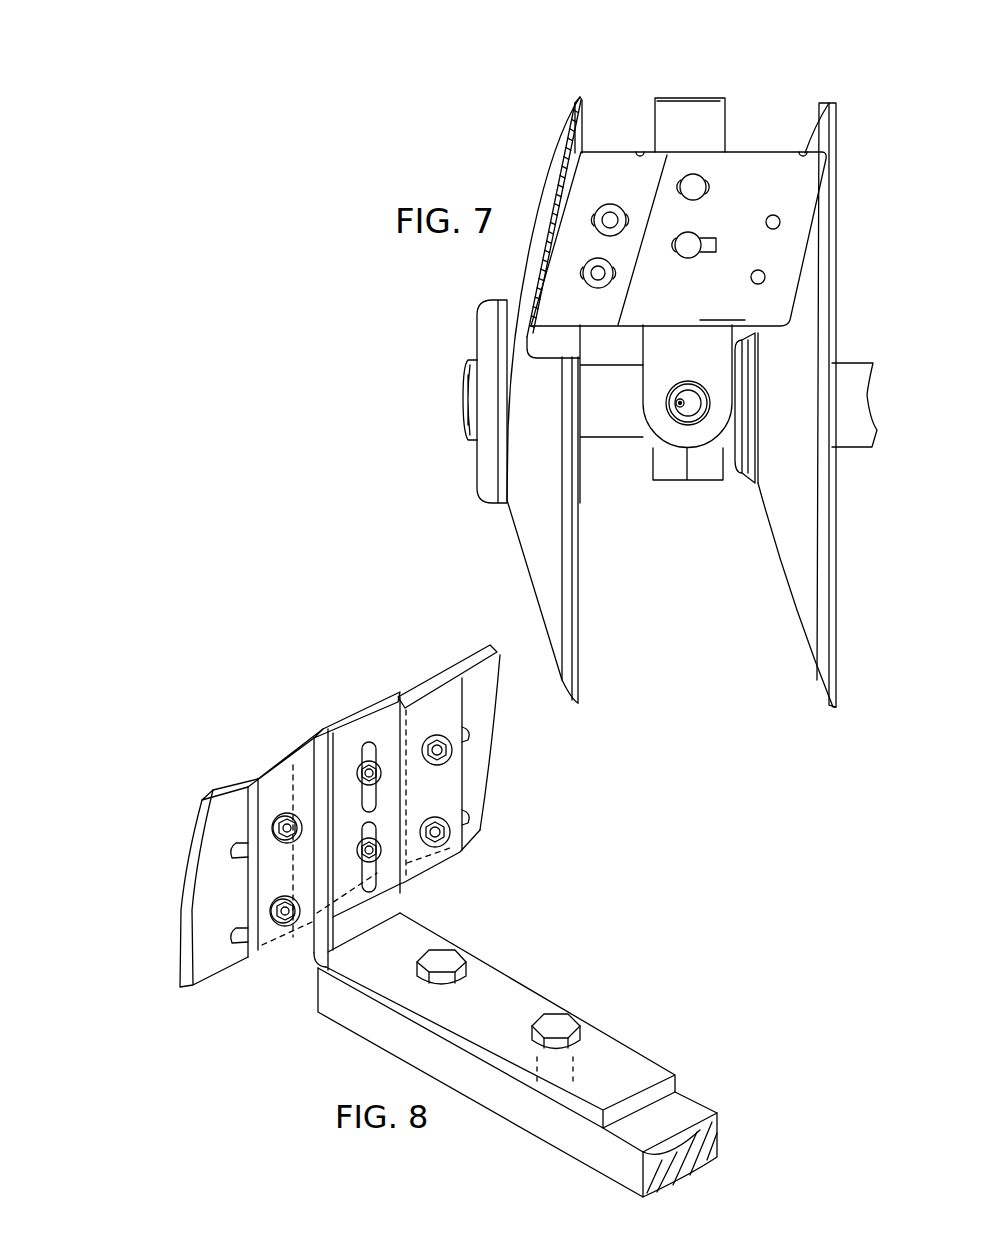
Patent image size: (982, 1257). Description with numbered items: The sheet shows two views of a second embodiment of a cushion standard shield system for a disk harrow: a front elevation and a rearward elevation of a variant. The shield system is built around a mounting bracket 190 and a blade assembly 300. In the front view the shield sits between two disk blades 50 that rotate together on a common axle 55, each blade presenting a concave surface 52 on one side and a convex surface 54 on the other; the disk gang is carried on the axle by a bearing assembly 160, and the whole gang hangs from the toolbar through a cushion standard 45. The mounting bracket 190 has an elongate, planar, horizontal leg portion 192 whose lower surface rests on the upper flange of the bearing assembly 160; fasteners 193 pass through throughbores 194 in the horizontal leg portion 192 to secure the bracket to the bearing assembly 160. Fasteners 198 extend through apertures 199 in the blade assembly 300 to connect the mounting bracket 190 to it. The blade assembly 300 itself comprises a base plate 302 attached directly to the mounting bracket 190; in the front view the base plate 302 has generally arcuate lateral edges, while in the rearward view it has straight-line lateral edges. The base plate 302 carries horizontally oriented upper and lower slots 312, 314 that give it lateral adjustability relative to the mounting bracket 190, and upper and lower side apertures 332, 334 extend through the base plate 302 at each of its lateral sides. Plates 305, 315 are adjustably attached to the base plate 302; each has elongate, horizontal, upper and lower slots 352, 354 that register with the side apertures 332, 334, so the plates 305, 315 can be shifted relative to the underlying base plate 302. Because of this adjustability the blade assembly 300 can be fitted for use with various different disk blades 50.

In FIG. 7, the cushion standard 45 is at (706, 109).
In FIG. 8, the cushion standard 45 is at (685, 1163).
In FIG. 7, the disk blade 50 is at (546, 422).
In FIG. 7, the concave surface 52 is at (824, 661).
In FIG. 7, the convex surface 54 is at (522, 527).
In FIG. 7, the common axle 55 is at (860, 440).
In FIG. 7, the bearing assembly 160 is at (664, 437).
In FIG. 8, the mounting bracket 190 is at (668, 1083).
In FIG. 8, the horizontal leg portion 192 is at (483, 987).
In FIG. 8, the fastener 193 is at (558, 1015).
In FIG. 8, the throughbore 194 is at (597, 1047).
In FIG. 7, the fastener 198 is at (540, 322).
In FIG. 8, the fastener 198 is at (298, 921).
In FIG. 8, the aperture 199 is at (405, 887).
In FIG. 7, the blade assembly 300 is at (757, 155).
In FIG. 8, the blade assembly 300 is at (262, 769).
In FIG. 7, the base plate 302 is at (724, 304).
In FIG. 8, the base plate 302 is at (315, 735).
In FIG. 7, the plate 305 is at (597, 175).
In FIG. 8, the plate 305 is at (470, 790).
In FIG. 7, the upper slot 312 is at (697, 180).
In FIG. 7, the lower slot 314 is at (700, 238).
In FIG. 8, the plate 315 is at (200, 824).
In FIG. 7, the upper side aperture 332 is at (778, 228).
In FIG. 7, the lower side aperture 334 is at (762, 283).
In FIG. 7, the upper slot 352 is at (597, 227).
In FIG. 8, the upper slot 352 is at (234, 860).
In FIG. 7, the lower slot 354 is at (582, 287).
In FIG. 8, the lower slot 354 is at (245, 937).